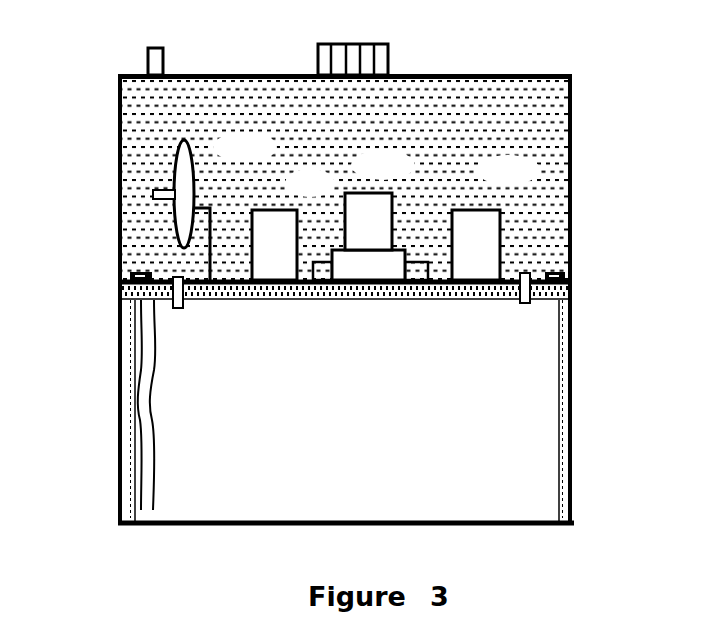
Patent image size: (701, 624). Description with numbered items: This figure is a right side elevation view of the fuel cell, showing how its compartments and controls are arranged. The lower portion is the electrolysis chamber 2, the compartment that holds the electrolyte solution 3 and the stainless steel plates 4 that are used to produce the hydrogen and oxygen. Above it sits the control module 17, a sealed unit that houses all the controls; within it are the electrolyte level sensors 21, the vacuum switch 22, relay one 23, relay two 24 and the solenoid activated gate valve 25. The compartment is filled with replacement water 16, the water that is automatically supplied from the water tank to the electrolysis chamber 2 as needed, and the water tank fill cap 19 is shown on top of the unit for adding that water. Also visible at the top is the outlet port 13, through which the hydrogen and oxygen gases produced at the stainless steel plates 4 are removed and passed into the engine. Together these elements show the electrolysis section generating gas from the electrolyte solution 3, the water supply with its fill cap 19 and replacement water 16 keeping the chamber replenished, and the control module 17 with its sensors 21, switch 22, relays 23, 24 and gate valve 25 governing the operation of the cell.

The electrolysis chamber 2 is at (203, 533).
The electrolyte solution 3 is at (122, 338).
The stainless steel plates 4 is at (467, 502).
The outlet port 13 is at (147, 62).
The replacement water 16 is at (133, 132).
The control module 17 is at (117, 200).
The water tank fill cap 19 is at (390, 58).
The electrolyte level sensors 21 is at (133, 275).
The vacuum switch 22 is at (198, 183).
The relay one 23 is at (278, 223).
The relay two 24 is at (490, 222).
The solenoid activated gate valve 25 is at (370, 208).